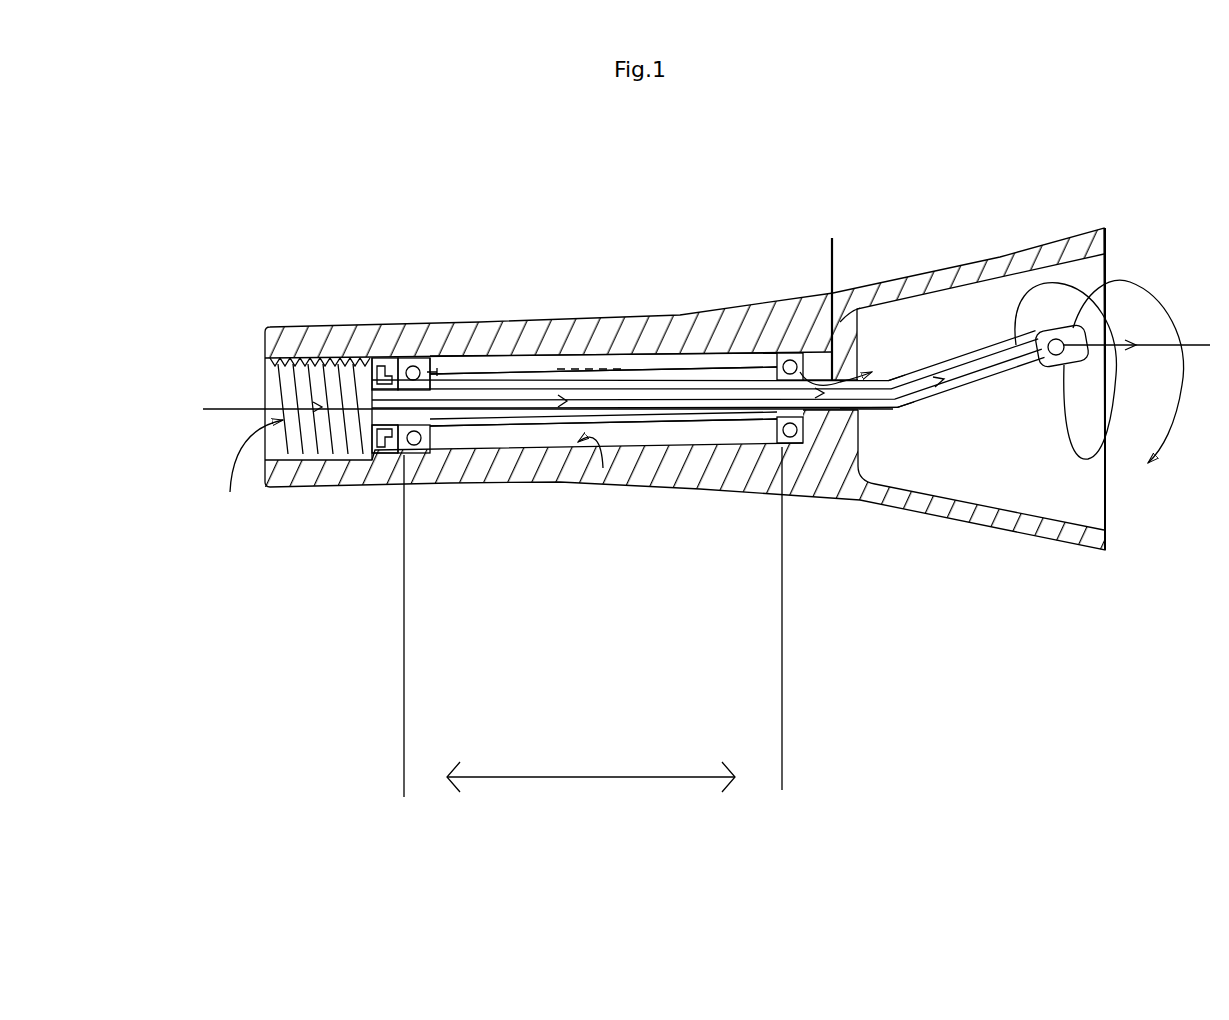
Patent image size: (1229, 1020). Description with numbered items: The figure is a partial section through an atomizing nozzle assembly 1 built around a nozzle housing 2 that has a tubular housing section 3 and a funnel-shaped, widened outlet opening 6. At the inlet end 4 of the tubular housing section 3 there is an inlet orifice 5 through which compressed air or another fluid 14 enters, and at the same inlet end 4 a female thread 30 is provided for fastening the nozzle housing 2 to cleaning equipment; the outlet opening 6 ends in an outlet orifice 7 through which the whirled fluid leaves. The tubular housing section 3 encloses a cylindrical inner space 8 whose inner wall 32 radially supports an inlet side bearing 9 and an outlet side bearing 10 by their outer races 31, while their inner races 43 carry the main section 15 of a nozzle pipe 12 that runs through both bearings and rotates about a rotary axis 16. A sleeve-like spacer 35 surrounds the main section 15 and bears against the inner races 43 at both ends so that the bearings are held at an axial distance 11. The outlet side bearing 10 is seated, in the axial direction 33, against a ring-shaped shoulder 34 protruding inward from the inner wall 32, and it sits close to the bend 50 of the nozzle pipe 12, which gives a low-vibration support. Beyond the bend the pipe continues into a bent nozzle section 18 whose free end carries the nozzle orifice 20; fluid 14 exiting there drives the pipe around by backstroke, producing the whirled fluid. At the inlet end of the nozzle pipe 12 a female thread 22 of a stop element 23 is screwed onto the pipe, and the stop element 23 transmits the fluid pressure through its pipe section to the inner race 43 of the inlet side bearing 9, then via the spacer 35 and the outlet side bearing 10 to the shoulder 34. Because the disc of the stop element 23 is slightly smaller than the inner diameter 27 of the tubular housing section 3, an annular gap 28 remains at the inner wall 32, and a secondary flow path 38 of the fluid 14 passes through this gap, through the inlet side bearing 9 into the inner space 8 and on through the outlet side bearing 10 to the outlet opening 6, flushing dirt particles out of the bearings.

The atomizing nozzle assembly 1 is at (868, 262).
The nozzle housing 2 is at (705, 314).
The tubular housing section 3 is at (538, 352).
The inlet end 4 is at (260, 350).
The inlet orifice 5 is at (228, 477).
The outlet opening 6 is at (1026, 247).
The outlet orifice 7 is at (1107, 268).
The cylindrical inner space 8 is at (596, 352).
The inlet side bearing 9 is at (436, 441).
The outlet side bearing 10 is at (776, 444).
The axial distance 11 is at (590, 780).
The nozzle pipe 12 is at (912, 413).
The fluid 14 is at (230, 405).
The main section 15 is at (707, 424).
The rotary axis 16 is at (855, 402).
The nozzle section 18 is at (1053, 366).
The nozzle orifice 20 is at (1078, 350).
The female thread 22 is at (368, 440).
The stop element 23 is at (372, 452).
The inner diameter 27 is at (368, 360).
The annular gap 28 is at (322, 348).
The female thread 30 is at (372, 362).
The outer race 31 is at (412, 453).
The inner wall 32 is at (483, 358).
The axial direction 33 is at (425, 362).
The shoulder 34 is at (811, 330).
The spacer 35 is at (658, 433).
The secondary flow path 38 is at (392, 357).
The inner race 43 is at (434, 431).
The bend 50 is at (903, 370).